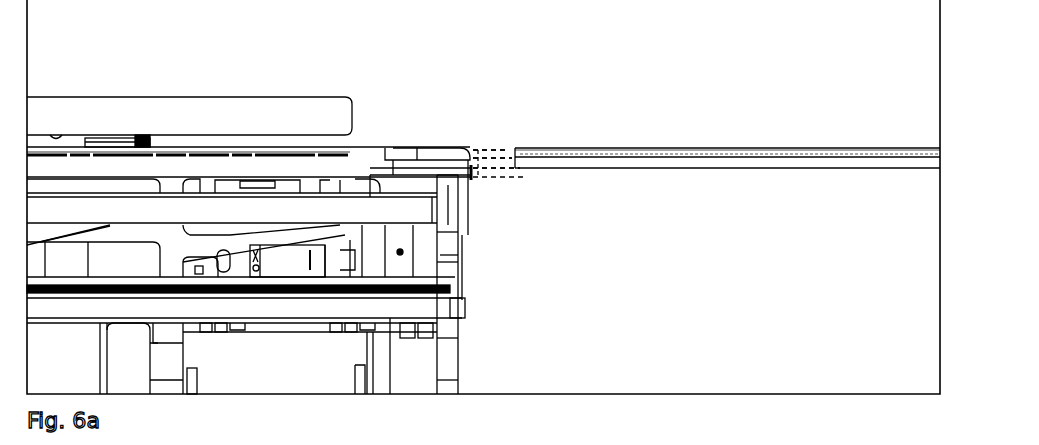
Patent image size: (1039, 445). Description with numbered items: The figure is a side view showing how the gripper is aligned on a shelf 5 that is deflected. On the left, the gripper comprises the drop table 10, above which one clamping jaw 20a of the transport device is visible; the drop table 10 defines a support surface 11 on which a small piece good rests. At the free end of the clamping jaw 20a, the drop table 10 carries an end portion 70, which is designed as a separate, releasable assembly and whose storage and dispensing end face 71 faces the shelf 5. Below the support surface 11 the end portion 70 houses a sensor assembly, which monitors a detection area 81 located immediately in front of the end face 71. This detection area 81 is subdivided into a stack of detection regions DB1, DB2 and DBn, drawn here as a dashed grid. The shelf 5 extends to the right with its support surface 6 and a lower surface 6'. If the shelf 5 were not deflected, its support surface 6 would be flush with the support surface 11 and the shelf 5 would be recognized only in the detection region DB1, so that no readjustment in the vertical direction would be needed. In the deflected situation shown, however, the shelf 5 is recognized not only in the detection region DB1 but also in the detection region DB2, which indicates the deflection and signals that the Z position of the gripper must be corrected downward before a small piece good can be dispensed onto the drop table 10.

The clamping jaw 20a is at (226, 122).
The drop table 10 is at (318, 150).
The support surface 11 is at (383, 150).
The storage and dispensing end face 71 is at (453, 150).
The detection area 81 is at (500, 135).
The support surface of the shelf 6 is at (727, 107).
The lower layer of panel 6' is at (727, 107).
The shelf 5 is at (752, 150).
The detection region DBn is at (480, 172).
The detection region DB2 is at (500, 163).
The detection region DB1 is at (515, 163).
The end portion 70 is at (480, 287).